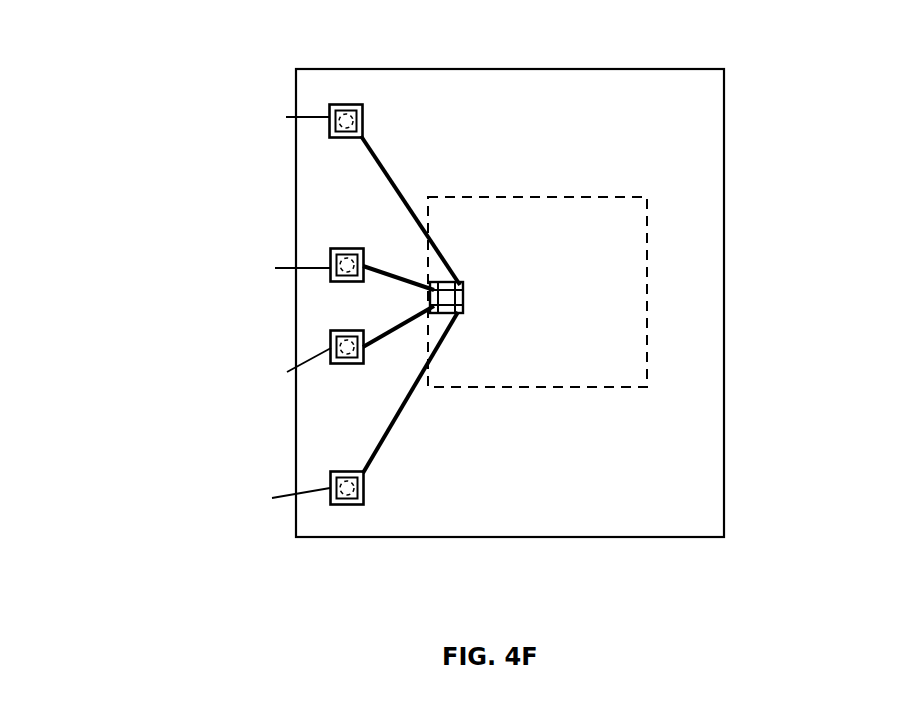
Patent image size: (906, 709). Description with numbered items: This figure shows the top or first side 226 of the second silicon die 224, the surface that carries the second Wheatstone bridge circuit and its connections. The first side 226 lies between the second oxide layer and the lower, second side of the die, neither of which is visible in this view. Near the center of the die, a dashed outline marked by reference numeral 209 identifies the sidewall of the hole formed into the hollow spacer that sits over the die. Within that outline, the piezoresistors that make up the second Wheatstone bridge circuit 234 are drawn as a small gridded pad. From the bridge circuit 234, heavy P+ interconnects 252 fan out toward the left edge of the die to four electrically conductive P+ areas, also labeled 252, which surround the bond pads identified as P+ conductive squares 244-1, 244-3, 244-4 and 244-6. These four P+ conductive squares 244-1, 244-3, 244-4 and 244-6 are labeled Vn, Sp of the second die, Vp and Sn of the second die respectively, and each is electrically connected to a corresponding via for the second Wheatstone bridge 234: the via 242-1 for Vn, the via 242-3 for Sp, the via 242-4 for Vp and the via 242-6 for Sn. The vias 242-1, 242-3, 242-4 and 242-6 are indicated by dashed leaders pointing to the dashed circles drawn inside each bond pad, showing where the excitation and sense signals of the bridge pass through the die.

The second silicon die 224 is at (807, 45).
The first side of the second silicon die 226 is at (703, 111).
The sidewall of the hole 209 is at (655, 274).
The second Wheatstone bridge circuit 234 is at (478, 307).
The P+ interconnects 252 is at (386, 147).
The via for Vn 242-1 is at (344, 106).
The via for Sp 242-3 is at (345, 250).
The via for Vp 242-4 is at (347, 366).
The via for Sn 242-6 is at (347, 506).
The P+ conductive square 244-1 is at (250, 111).
The P+ conductive square 244-3 is at (144, 255).
The P+ conductive square 244-4 is at (250, 379).
The P+ conductive square 244-6 is at (142, 487).